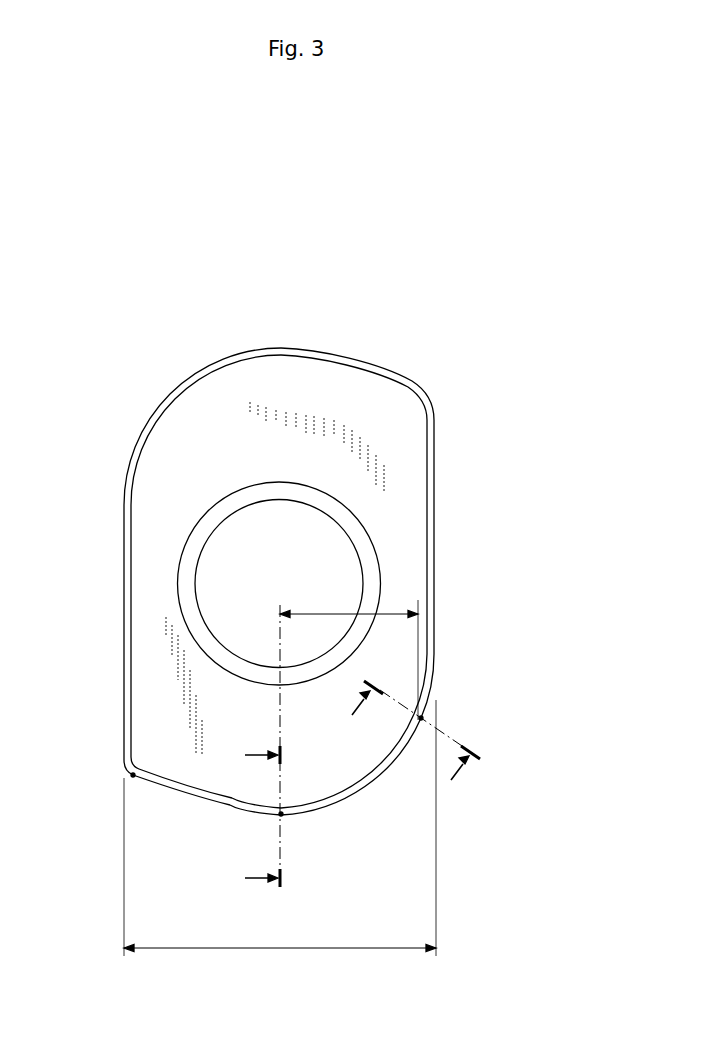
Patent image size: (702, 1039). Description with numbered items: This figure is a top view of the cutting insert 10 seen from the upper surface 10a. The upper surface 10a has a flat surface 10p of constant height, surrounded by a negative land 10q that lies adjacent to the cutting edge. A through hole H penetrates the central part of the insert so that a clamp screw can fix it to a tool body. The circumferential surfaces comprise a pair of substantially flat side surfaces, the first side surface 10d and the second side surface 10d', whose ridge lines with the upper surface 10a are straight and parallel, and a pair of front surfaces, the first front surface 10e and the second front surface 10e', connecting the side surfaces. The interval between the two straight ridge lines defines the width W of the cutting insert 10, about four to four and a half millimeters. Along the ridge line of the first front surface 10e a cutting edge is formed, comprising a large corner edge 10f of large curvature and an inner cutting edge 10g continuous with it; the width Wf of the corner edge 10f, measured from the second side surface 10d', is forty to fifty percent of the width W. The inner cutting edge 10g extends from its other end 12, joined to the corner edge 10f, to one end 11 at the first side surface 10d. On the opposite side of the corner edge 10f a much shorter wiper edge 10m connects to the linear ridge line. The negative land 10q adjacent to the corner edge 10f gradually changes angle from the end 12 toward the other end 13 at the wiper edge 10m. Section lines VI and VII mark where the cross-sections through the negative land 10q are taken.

The cutting insert 10 is at (468, 488).
The flat surface 10p is at (200, 415).
The upper surface 10a is at (206, 392).
The second front surface 10e' is at (357, 363).
The second side surface 10d' is at (489, 537).
The wiper edge 10m is at (436, 653).
The negative land 10q is at (375, 782).
The corner edge 10f is at (338, 808).
The first front surface 10e is at (287, 857).
The inner cutting edge 10g is at (195, 797).
The first side surface 10d is at (74, 632).
The through hole H is at (236, 518).
The one end 11 is at (131, 777).
The other end 12 is at (282, 811).
The other end 13 is at (428, 716).
The width W is at (280, 842).
The width of the corner edge Wf is at (349, 736).
The line VI- VI is at (249, 818).
The line VII- VII is at (406, 745).